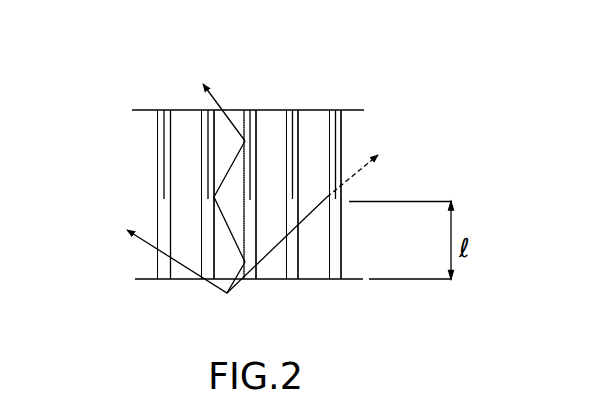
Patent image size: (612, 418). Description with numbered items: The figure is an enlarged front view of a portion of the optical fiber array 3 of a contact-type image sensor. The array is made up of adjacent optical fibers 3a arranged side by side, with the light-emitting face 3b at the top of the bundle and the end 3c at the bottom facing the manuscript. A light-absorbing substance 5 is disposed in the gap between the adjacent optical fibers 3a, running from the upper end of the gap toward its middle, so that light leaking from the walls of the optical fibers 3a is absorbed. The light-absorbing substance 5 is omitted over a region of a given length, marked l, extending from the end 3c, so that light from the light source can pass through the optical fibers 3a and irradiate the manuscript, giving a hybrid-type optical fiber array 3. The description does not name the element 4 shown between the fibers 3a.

The optical fiber array 3 is at (265, 29).
The optical fibers 3a is at (180, 232).
The light-emitting face 3b is at (240, 110).
The end of the optical fiber array 3c is at (267, 280).
The grooves 4 is at (163, 273).
The light-absorbing substance 5 is at (163, 145).